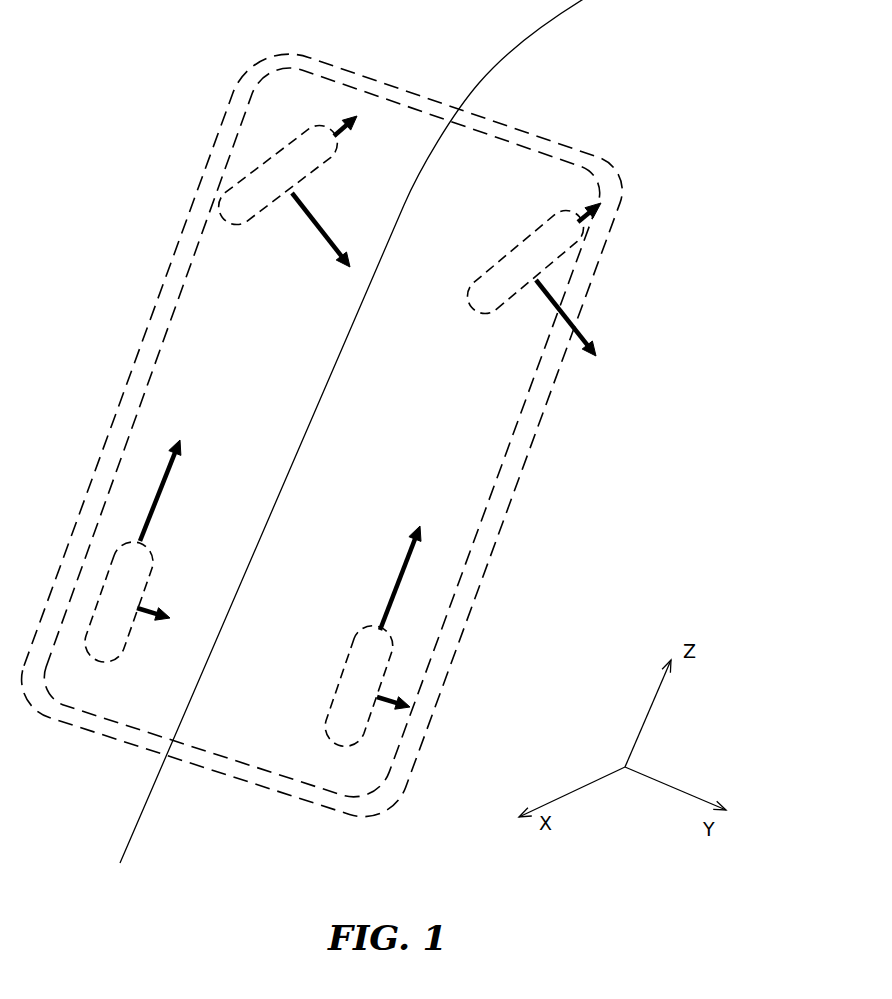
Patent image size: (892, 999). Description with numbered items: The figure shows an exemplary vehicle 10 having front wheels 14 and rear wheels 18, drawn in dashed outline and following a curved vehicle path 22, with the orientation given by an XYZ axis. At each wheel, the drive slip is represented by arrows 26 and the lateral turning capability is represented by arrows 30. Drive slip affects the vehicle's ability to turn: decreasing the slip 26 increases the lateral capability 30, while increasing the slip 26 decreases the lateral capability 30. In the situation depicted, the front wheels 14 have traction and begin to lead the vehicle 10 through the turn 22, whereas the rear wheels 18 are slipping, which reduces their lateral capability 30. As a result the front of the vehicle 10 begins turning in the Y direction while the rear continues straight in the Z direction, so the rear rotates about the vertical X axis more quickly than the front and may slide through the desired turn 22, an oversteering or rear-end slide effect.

The vehicle 10 is at (594, 456).
The front wheels 14 is at (293, 188).
The rear wheels 18 is at (127, 613).
The curved vehicle path 22 is at (656, 17).
The arrows representing drive slip 26 is at (339, 131).
The arrows representing lateral turning capability 30 is at (310, 220).